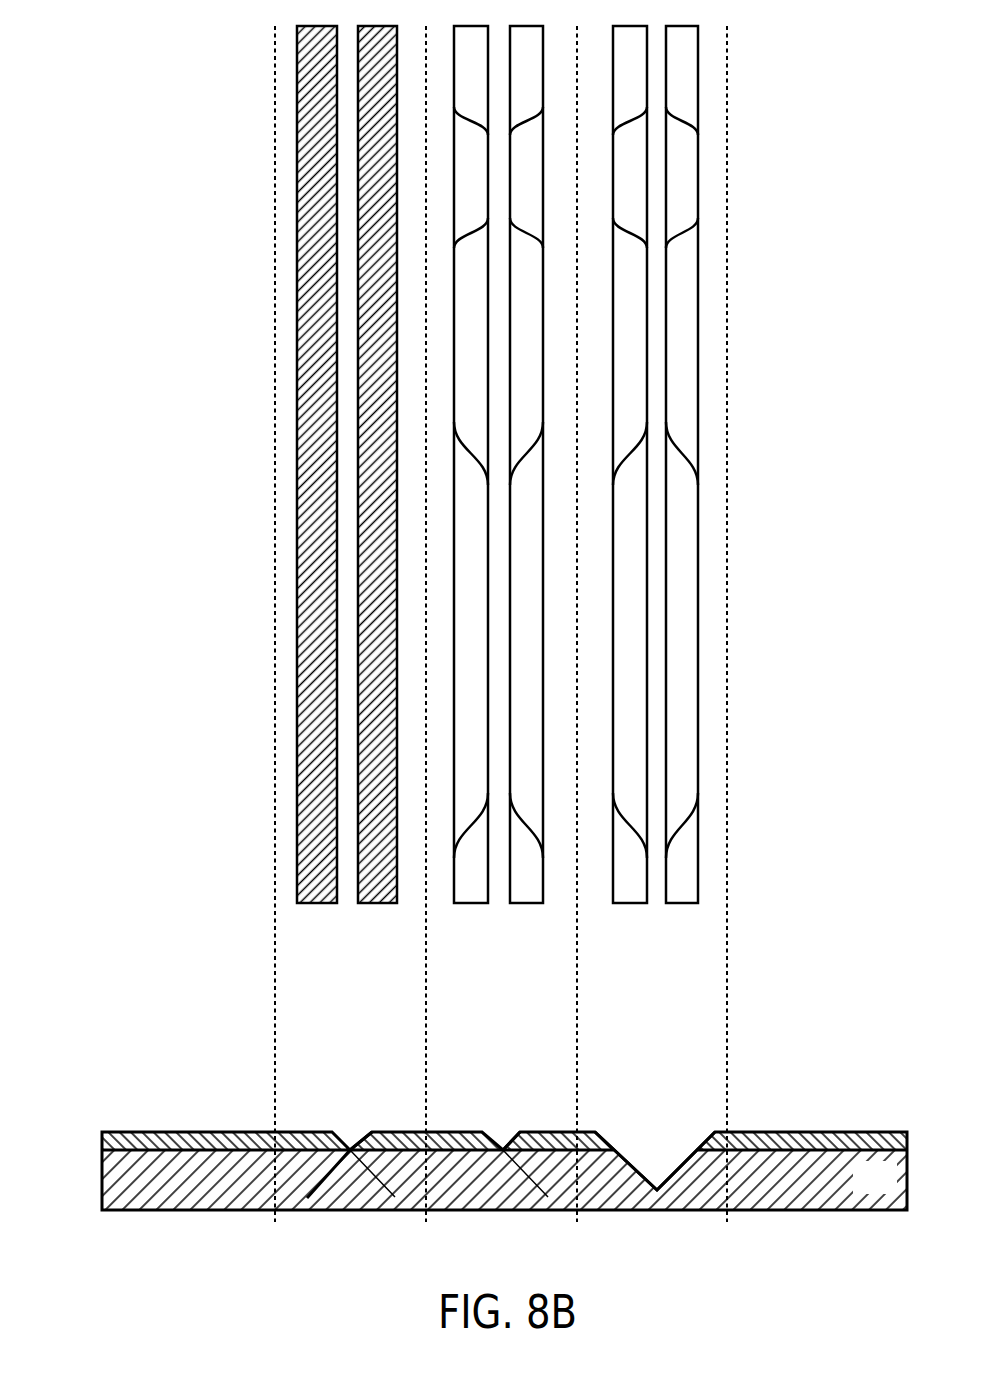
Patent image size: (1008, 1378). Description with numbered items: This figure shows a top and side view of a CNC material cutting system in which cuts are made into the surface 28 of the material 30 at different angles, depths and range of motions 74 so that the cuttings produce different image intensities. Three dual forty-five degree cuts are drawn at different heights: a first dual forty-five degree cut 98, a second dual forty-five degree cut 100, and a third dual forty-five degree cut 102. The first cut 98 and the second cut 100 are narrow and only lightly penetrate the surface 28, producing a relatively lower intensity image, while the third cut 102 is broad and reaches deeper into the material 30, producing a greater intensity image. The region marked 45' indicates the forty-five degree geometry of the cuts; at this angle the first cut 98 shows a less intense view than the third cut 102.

The range of motions 74 is at (297, 835).
The surface 28 is at (102, 1138).
The material 30 is at (102, 1180).
The first dual 45 degree cut 98 is at (340, 1155).
The second dual 45 degree cut 100 is at (503, 1140).
The third dual 45 degree cut 102 is at (655, 1140).
The substrate section 45' is at (873, 1179).